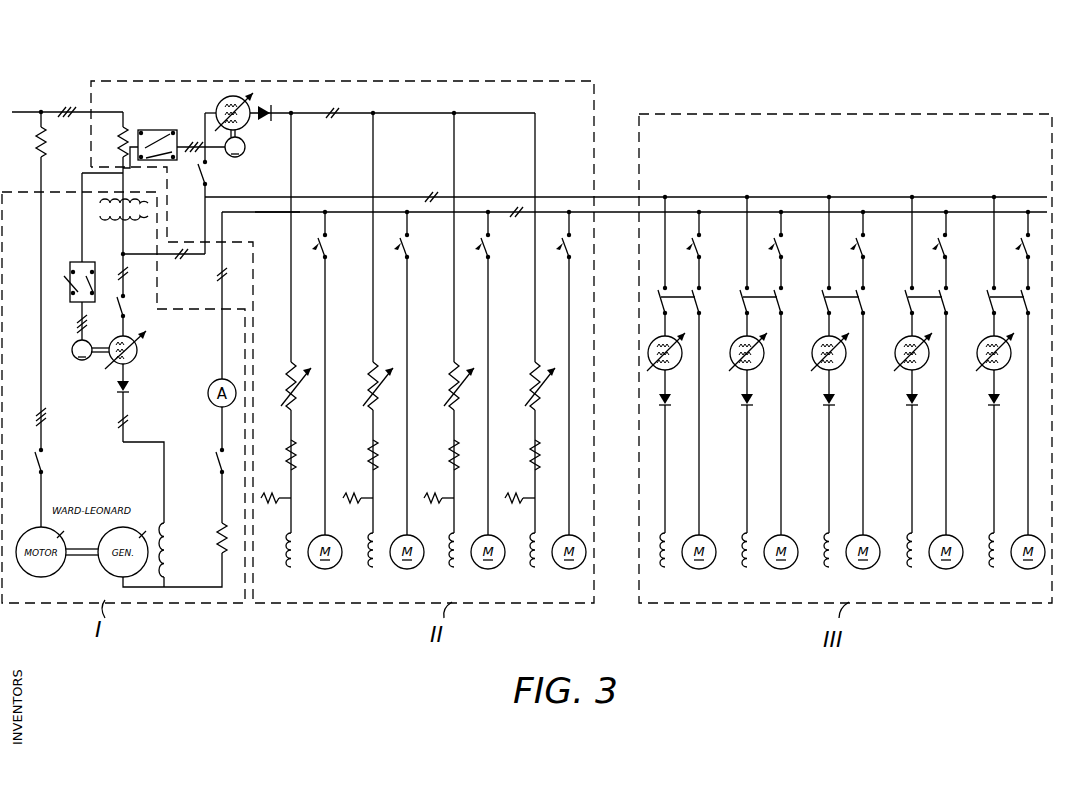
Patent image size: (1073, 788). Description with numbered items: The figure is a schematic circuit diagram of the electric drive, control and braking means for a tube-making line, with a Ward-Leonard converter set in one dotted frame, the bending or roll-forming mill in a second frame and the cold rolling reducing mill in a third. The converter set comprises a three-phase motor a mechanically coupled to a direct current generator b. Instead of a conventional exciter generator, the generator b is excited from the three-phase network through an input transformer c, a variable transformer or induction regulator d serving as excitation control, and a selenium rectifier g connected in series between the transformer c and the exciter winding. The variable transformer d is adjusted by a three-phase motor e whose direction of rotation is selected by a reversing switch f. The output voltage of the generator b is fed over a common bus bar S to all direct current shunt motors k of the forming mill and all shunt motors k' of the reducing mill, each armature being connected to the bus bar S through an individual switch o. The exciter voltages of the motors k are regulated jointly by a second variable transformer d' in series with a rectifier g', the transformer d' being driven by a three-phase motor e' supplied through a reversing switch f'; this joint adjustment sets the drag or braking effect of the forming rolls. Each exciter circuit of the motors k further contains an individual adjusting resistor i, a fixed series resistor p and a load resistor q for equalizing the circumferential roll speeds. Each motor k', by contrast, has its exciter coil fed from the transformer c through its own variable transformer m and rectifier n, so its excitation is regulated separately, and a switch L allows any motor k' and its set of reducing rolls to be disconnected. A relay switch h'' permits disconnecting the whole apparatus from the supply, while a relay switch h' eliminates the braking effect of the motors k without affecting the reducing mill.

The three-phase motor a is at (66, 527).
The direct current generator b is at (147, 527).
The input transformer c is at (112, 216).
The variable transformer d is at (130, 350).
The three-phase motor e is at (73, 350).
The reversing switch f is at (72, 282).
The selenium rectifier g is at (133, 389).
The relay switch h' is at (211, 173).
The relay switch h'' is at (208, 461).
The reversing switch f' is at (157, 131).
The second variable transformer d' is at (234, 94).
The three-phase motor e' is at (244, 147).
The rectifier g' is at (266, 87).
The bus bar S is at (278, 212).
The individual switch o is at (680, 246).
The adjusting resistor i is at (418, 386).
The fixed series resistor p is at (418, 455).
The load resistor q is at (278, 501).
The direct current shunt motor k is at (418, 563).
The switch L is at (851, 302).
The variable transformer m is at (834, 356).
The rectifier n is at (672, 402).
The direct current shunt motor k' is at (834, 563).